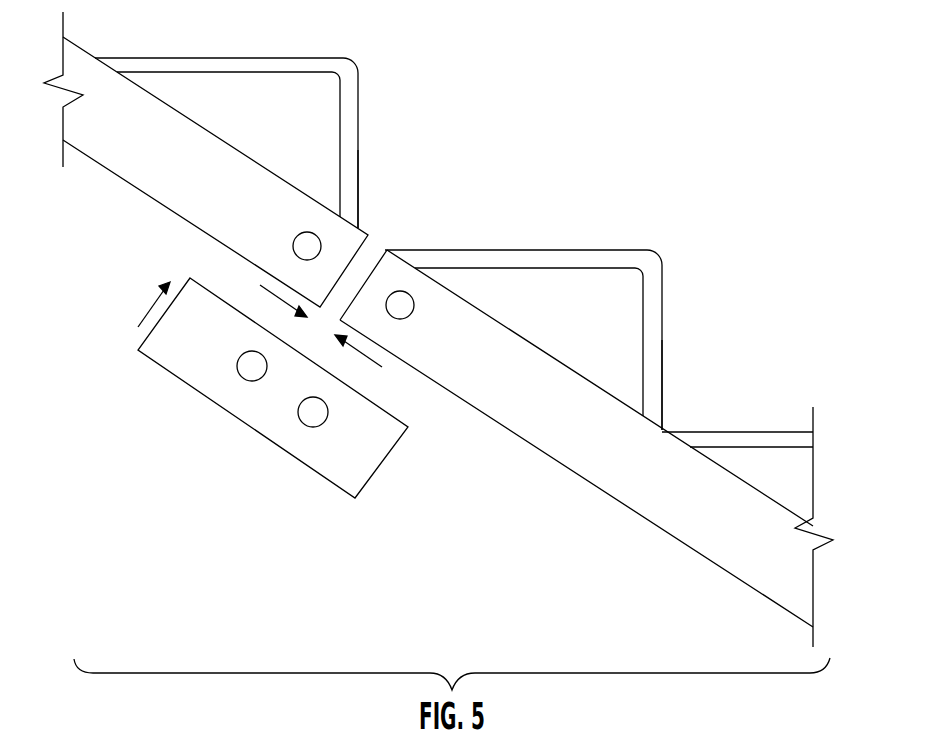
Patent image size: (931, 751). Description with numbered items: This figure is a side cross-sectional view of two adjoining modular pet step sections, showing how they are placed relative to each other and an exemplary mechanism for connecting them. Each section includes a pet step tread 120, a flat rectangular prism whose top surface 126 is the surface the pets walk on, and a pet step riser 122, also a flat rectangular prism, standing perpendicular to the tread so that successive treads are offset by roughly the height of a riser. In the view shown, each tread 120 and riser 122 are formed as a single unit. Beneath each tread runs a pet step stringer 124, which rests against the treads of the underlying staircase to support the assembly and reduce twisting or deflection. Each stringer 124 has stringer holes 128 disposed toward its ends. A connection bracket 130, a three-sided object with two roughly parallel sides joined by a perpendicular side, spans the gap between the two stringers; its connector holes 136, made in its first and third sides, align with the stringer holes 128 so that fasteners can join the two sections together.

The pet step tread 120 is at (295, 67).
The pet step riser 122 is at (358, 172).
The pet step stringer 124 is at (118, 177).
The top surface 126 is at (218, 58).
The stringer hole 128 is at (293, 246).
The connection bracket 130 is at (175, 373).
The connector hole 136 is at (239, 374).